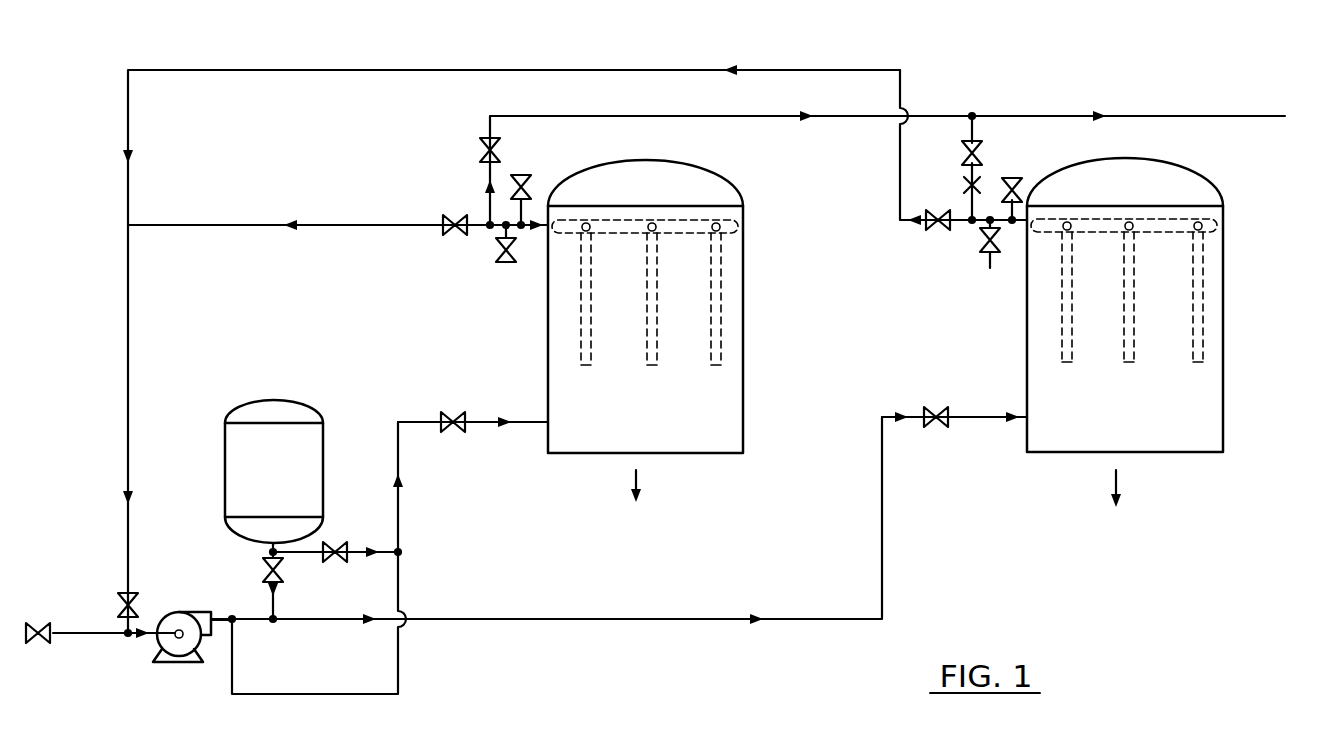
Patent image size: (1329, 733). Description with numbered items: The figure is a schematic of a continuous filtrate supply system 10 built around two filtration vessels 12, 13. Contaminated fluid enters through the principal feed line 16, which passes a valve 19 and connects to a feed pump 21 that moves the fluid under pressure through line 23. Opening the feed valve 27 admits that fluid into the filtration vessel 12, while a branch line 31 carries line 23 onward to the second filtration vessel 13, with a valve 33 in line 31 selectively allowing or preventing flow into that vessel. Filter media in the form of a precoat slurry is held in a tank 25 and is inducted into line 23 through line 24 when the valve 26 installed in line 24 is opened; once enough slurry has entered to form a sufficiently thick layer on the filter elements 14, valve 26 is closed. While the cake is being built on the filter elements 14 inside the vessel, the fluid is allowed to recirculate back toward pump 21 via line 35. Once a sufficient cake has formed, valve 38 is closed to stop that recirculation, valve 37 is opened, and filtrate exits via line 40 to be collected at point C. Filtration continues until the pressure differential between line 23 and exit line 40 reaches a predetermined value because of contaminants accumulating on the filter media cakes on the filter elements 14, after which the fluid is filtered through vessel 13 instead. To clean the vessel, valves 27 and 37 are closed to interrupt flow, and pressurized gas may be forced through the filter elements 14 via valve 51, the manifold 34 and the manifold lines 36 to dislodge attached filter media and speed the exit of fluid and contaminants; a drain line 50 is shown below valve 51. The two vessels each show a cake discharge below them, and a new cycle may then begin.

The continuous filtrate supply system 10 is at (1045, 90).
The filtration vessel 12 is at (1205, 178).
The second filtration vessel 13 is at (742, 197).
The filter elements 14 is at (1205, 252).
The principal feed line 16 is at (97, 637).
The feed inlet valve 19 is at (32, 627).
The feed pump 21 is at (185, 608).
The line 23 is at (618, 618).
The line 24 is at (278, 608).
The tank 25 is at (307, 403).
The valve 26 is at (264, 567).
The feed valve 27 is at (945, 408).
The branch line 31 is at (400, 535).
The valve 33 is at (458, 413).
The manifold 34 is at (1107, 222).
The line 35 is at (580, 70).
The manifold lines 36 is at (966, 175).
The valve 37 is at (983, 153).
The valve 38 is at (938, 232).
The exit line 40 is at (1013, 113).
The drain line 50 is at (990, 263).
The valve 51 is at (983, 235).